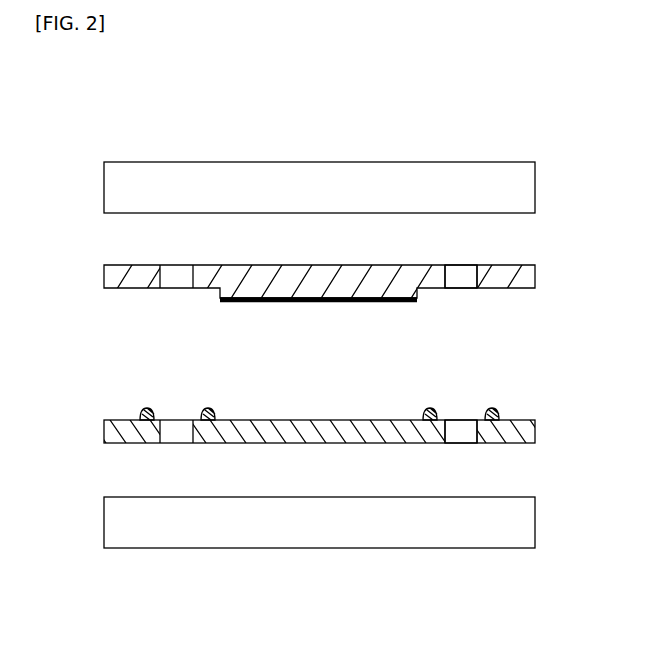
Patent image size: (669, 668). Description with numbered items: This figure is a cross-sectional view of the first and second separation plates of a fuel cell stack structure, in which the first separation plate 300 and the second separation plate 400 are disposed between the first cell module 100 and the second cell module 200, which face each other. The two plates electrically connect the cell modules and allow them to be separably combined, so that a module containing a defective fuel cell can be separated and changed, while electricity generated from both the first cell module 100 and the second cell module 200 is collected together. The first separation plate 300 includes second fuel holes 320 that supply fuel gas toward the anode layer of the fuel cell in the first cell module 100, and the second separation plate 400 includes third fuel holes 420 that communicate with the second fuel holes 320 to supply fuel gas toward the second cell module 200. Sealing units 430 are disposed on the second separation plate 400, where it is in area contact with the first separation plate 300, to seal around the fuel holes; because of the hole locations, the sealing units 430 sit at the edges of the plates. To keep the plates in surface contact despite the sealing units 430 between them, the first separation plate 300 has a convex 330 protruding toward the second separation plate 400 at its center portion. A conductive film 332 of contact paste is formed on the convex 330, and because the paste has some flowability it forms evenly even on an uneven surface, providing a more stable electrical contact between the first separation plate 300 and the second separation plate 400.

The first cell module 100 is at (313, 160).
The second cell module 200 is at (312, 548).
The first separation plate 300 is at (133, 277).
The second fuel holes 320 is at (460, 278).
The convex 330 is at (390, 303).
The conductive film 332 is at (242, 303).
The second separation plate 400 is at (133, 430).
The third fuel holes 420 is at (460, 432).
The sealing units 430 is at (147, 412).